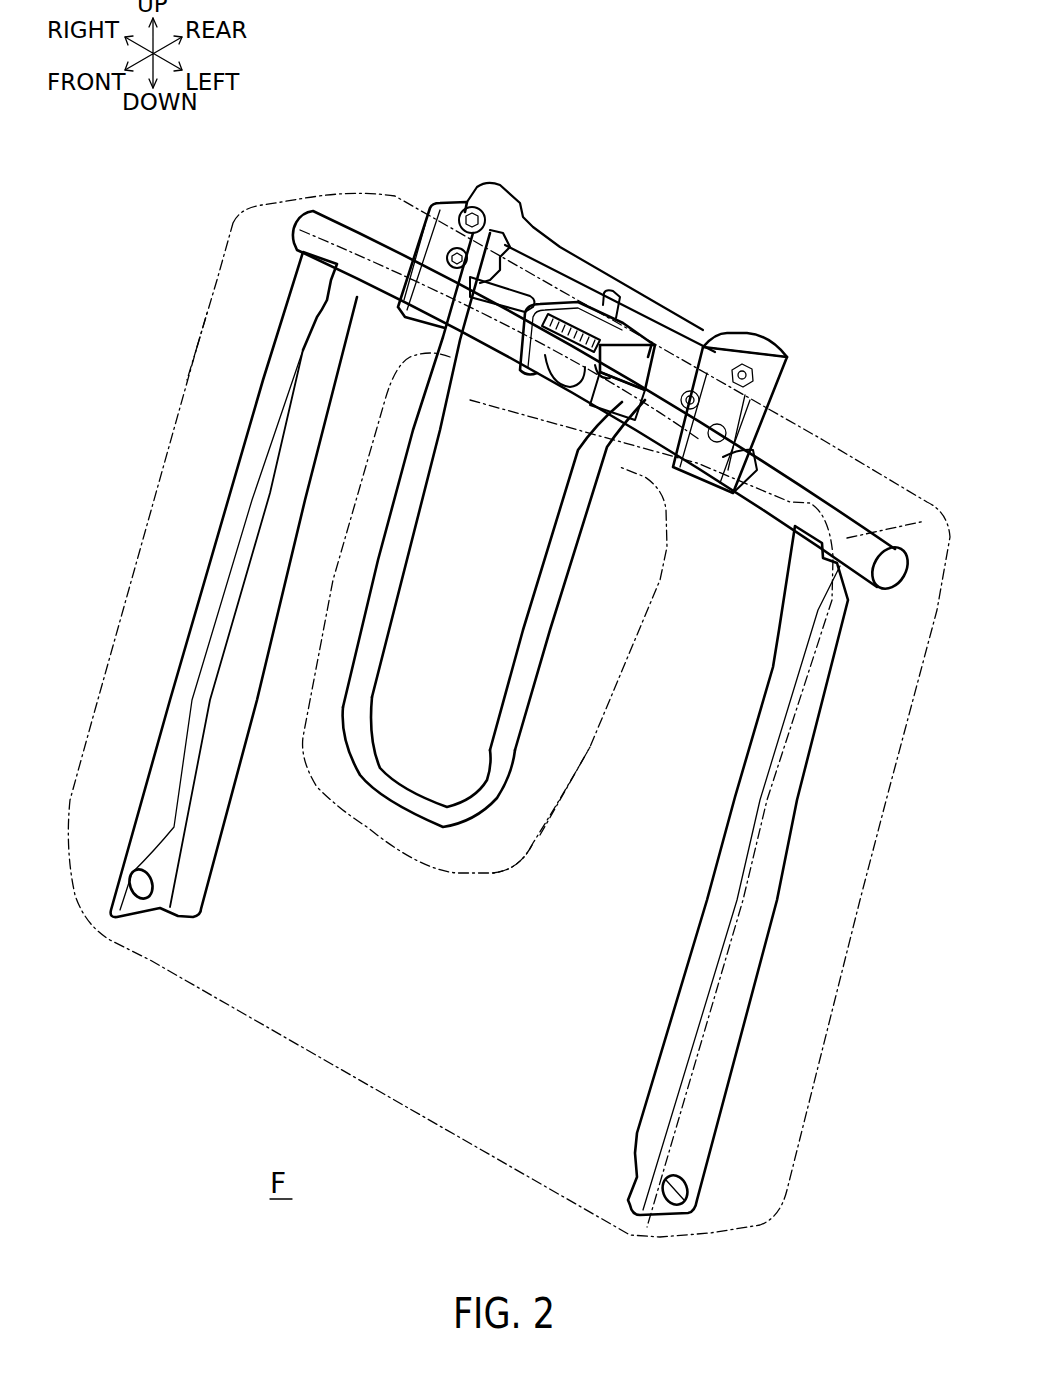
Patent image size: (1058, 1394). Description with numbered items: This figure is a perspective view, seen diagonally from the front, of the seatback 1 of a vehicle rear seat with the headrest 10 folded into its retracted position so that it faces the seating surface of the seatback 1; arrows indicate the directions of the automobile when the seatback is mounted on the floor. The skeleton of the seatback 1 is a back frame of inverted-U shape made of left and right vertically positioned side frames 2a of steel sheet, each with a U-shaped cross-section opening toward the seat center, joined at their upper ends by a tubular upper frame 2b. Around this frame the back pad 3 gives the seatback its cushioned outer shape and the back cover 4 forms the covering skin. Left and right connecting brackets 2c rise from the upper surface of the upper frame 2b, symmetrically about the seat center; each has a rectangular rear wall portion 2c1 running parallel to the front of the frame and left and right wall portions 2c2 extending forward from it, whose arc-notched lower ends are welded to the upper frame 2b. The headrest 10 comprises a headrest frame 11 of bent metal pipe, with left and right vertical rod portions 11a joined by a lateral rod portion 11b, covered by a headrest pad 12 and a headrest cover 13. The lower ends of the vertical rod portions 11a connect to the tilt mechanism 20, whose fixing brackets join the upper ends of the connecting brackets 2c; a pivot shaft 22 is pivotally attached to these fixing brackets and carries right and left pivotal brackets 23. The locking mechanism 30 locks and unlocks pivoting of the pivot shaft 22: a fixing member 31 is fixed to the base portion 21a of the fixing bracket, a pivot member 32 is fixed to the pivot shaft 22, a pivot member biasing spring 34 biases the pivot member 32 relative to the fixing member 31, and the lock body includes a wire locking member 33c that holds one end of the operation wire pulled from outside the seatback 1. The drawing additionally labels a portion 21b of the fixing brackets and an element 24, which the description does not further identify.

The seatback 1 is at (215, 279).
The side frames 2a is at (225, 505).
The upper frame 2b is at (836, 505).
The connecting brackets 2c is at (436, 225).
The rear wall portion 2c1 is at (425, 243).
The left and right wall portions 2c2 is at (400, 250).
The back pad 3 is at (212, 422).
The back cover 4 is at (193, 352).
The headrest 10 is at (590, 753).
The headrest frame 11 is at (494, 584).
The vertical rod portions 11a is at (416, 534).
The lateral rod portion 11b is at (400, 810).
The headrest pad 12 is at (557, 793).
The headrest cover 13 is at (533, 845).
The tilt mechanism 20 is at (750, 194).
The base portion 21a is at (753, 333).
The rail end portions 21b is at (520, 240).
The pivot shaft 22 is at (643, 372).
The pivotal brackets 23 is at (522, 280).
The engagement hooks 24 is at (563, 380).
The locking mechanism 30 is at (551, 359).
The fixing member 31 is at (522, 360).
The pivot member 32 is at (585, 330).
The wire locking member 33c is at (532, 359).
The pivot member biasing spring 34 is at (612, 300).